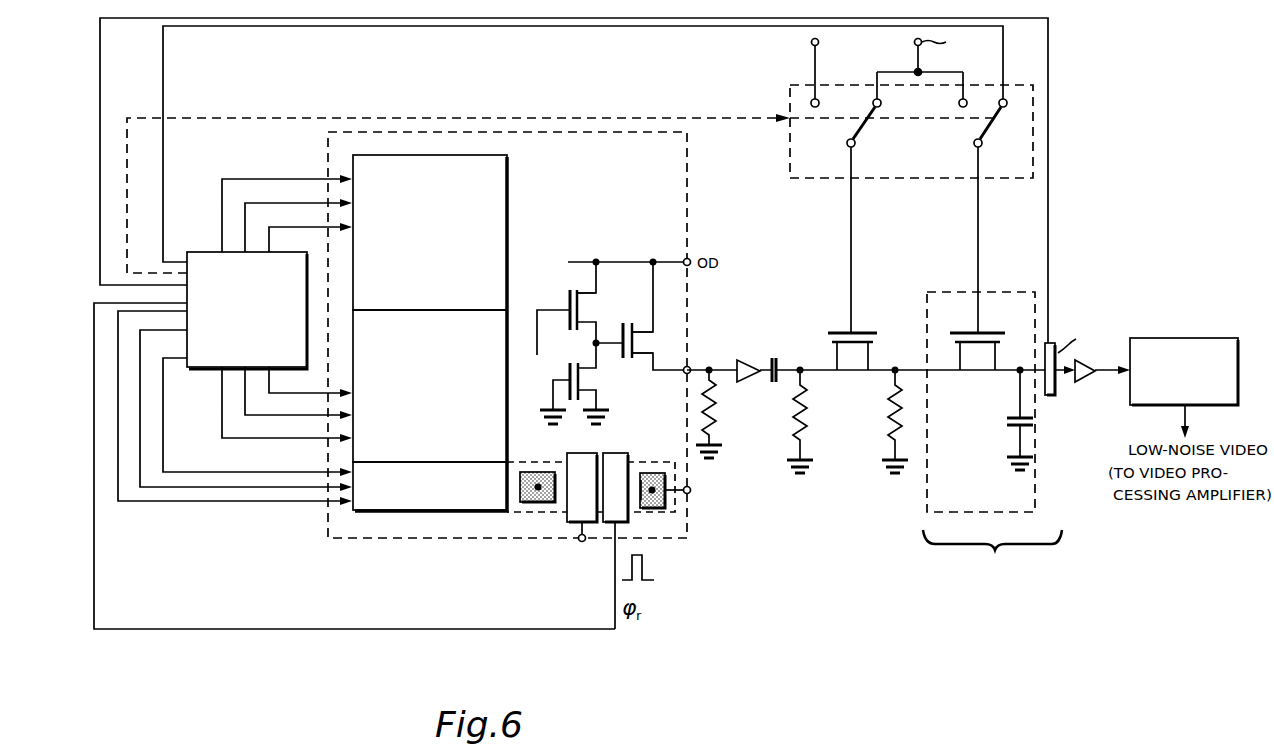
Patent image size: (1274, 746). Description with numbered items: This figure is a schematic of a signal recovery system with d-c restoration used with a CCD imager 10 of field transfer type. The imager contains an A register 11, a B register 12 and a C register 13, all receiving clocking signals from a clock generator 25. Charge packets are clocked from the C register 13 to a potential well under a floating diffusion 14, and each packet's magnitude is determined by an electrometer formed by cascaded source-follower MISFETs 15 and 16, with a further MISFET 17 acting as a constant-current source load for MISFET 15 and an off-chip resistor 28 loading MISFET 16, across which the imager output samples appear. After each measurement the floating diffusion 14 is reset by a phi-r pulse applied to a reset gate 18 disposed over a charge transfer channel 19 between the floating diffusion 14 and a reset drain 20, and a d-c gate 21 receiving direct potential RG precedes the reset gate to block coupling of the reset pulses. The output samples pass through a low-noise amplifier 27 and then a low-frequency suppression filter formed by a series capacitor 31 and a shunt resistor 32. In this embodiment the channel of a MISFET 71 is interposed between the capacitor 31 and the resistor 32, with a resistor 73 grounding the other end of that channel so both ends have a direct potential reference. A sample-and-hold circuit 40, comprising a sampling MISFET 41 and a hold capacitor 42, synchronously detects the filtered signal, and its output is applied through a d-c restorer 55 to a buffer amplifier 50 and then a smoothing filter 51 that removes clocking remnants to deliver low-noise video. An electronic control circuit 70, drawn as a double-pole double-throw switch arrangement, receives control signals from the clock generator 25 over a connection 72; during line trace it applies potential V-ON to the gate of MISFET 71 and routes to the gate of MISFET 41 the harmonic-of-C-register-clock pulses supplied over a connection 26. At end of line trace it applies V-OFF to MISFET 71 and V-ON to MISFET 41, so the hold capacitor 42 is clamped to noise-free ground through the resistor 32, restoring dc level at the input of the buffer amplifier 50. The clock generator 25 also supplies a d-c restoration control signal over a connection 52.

The CCD imager 10 is at (633, 193).
The A register 11 is at (438, 256).
The B register 12 is at (441, 411).
The C register 13 is at (485, 498).
The floating diffusion 14 is at (538, 487).
The source-follower MISFET 15 is at (584, 300).
The source-follower MISFET 16 is at (639, 340).
The MISFET 17 is at (596, 380).
The reset gate 18 is at (615, 453).
The charge transfer channel 19 is at (660, 473).
The reset drain 20 is at (642, 474).
The d-c gate 21 is at (582, 453).
The clock generator 25 is at (207, 252).
The connection 26 is at (585, 28).
The low-noise amplifier 27 is at (745, 359).
The off-chip resistor 28 is at (716, 422).
The series-arm capacitor 31 is at (774, 352).
The shunt-leg resistor 32 is at (886, 423).
The sample-and-hold circuit 40 is at (1002, 468).
The MISFET 41 is at (992, 333).
The hold capacitor 42 is at (1006, 424).
The buffer amplifier 50 is at (1086, 380).
The smoothing filter 51 is at (1171, 338).
The connection 52 is at (1048, 86).
The d-c restorer 55 is at (1052, 400).
The electronic control circuit 70 is at (925, 171).
The MISFET 71 is at (854, 333).
The connection 72 is at (530, 118).
The resistor 73 is at (792, 425).